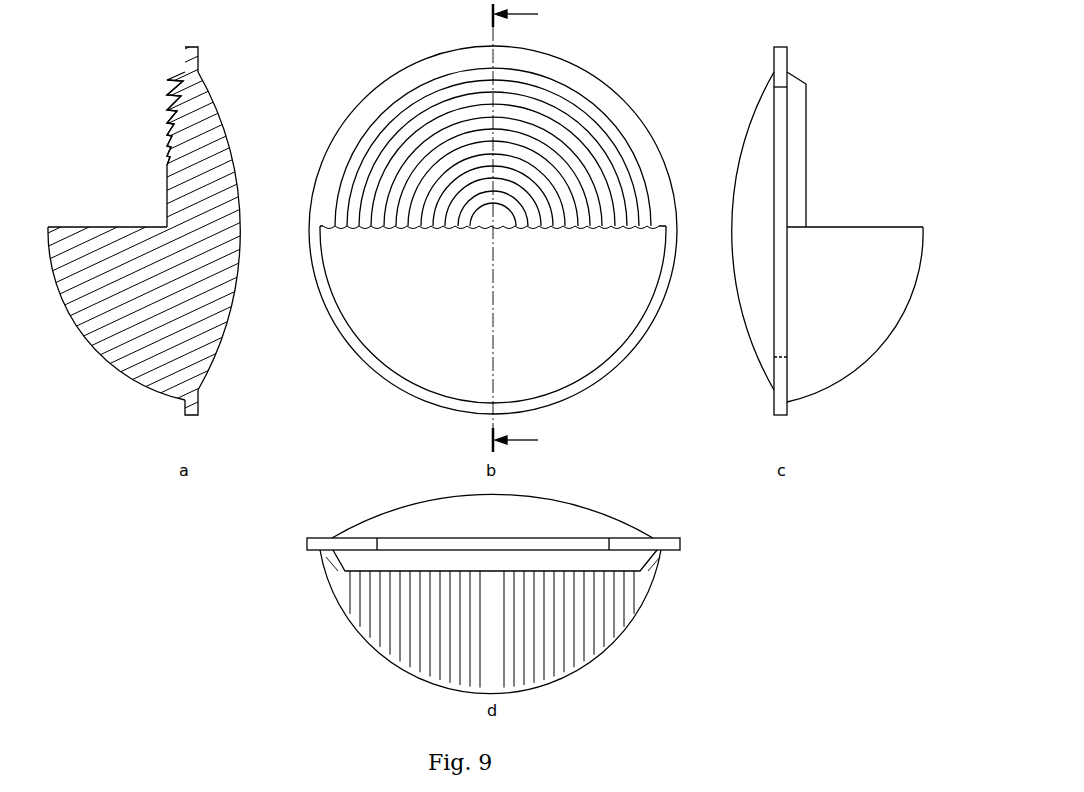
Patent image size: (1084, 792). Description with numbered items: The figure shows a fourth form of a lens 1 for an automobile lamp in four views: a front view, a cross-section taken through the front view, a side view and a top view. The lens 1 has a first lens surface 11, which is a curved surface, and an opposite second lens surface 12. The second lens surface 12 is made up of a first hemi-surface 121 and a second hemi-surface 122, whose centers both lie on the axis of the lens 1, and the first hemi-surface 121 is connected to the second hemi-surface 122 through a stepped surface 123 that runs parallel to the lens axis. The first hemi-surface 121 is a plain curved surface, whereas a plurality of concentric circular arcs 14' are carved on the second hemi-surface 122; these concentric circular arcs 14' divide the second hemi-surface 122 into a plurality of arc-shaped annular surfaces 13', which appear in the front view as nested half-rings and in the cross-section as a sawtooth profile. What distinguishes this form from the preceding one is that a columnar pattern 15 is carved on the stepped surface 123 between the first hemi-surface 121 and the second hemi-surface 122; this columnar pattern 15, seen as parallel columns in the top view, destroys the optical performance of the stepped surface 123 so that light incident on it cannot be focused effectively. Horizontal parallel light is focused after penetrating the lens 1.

The lens 1 is at (373, 88).
The first lens surface 11 is at (212, 112).
The second lens surface 12 is at (620, 618).
The first hemi-surface 121 is at (88, 333).
The second hemi-surface 122 is at (167, 148).
The stepped surface 123 is at (92, 227).
The annular surfaces 13' is at (387, 147).
The concentric circular arcs 14' is at (494, 132).
The columnar pattern 15 is at (633, 227).